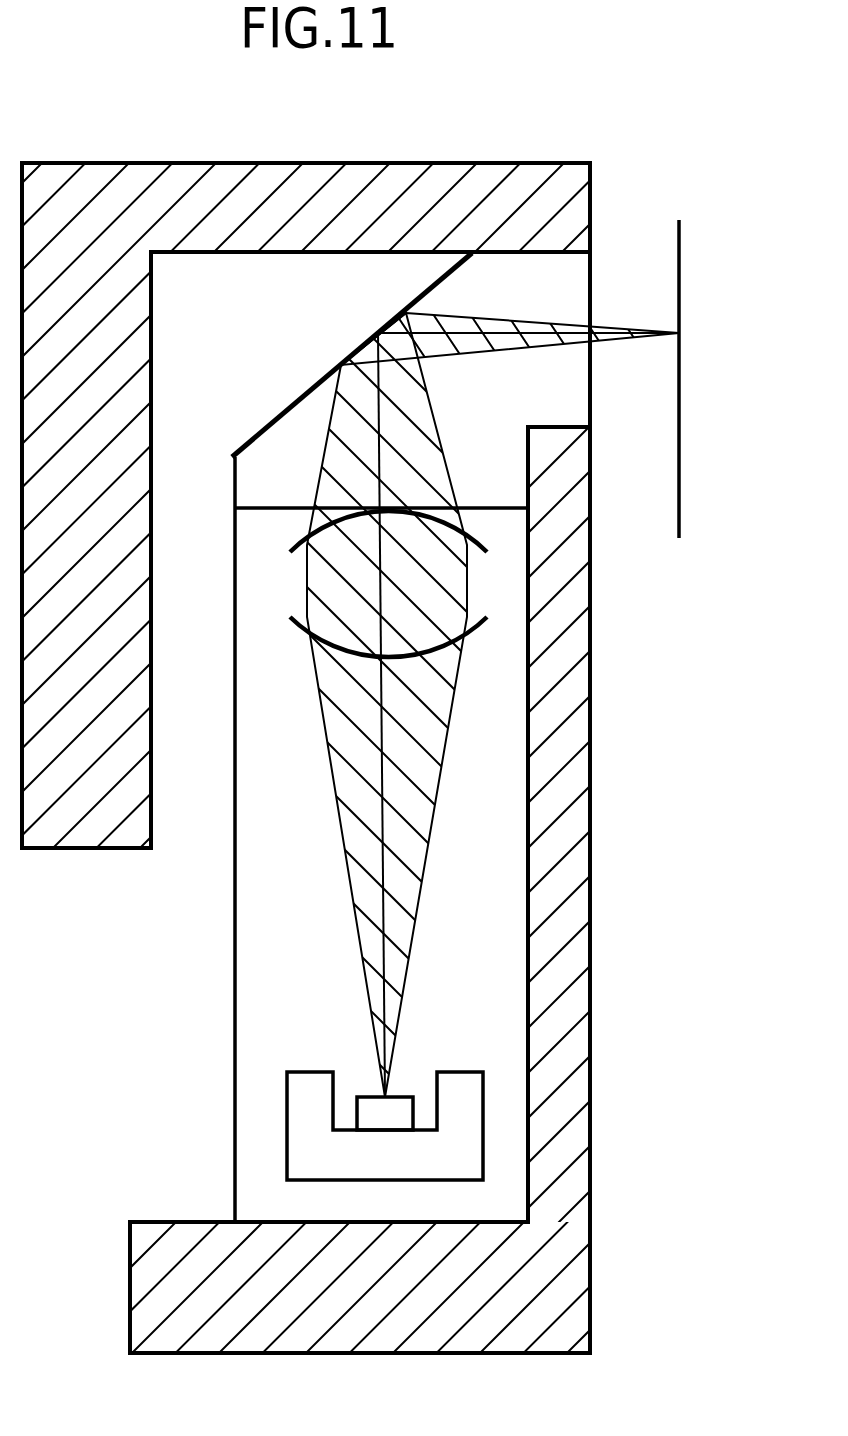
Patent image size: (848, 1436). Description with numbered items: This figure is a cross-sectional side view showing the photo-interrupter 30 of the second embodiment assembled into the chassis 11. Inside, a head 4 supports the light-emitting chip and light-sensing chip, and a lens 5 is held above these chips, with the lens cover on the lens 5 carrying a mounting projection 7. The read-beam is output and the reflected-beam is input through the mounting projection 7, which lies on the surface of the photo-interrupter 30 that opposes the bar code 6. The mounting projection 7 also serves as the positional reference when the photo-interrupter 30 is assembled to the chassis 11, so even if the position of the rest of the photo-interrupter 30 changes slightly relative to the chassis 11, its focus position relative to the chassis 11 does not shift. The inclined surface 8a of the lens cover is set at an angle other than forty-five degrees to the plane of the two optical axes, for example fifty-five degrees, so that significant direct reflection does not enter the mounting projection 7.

The chassis 11 is at (592, 176).
The photo-interrupter 30 is at (236, 1097).
The mounting projection 7 is at (578, 292).
The inclined surface 8a is at (290, 411).
The bar code 6 is at (682, 522).
The lens 5 is at (478, 622).
The head 4 is at (287, 1143).